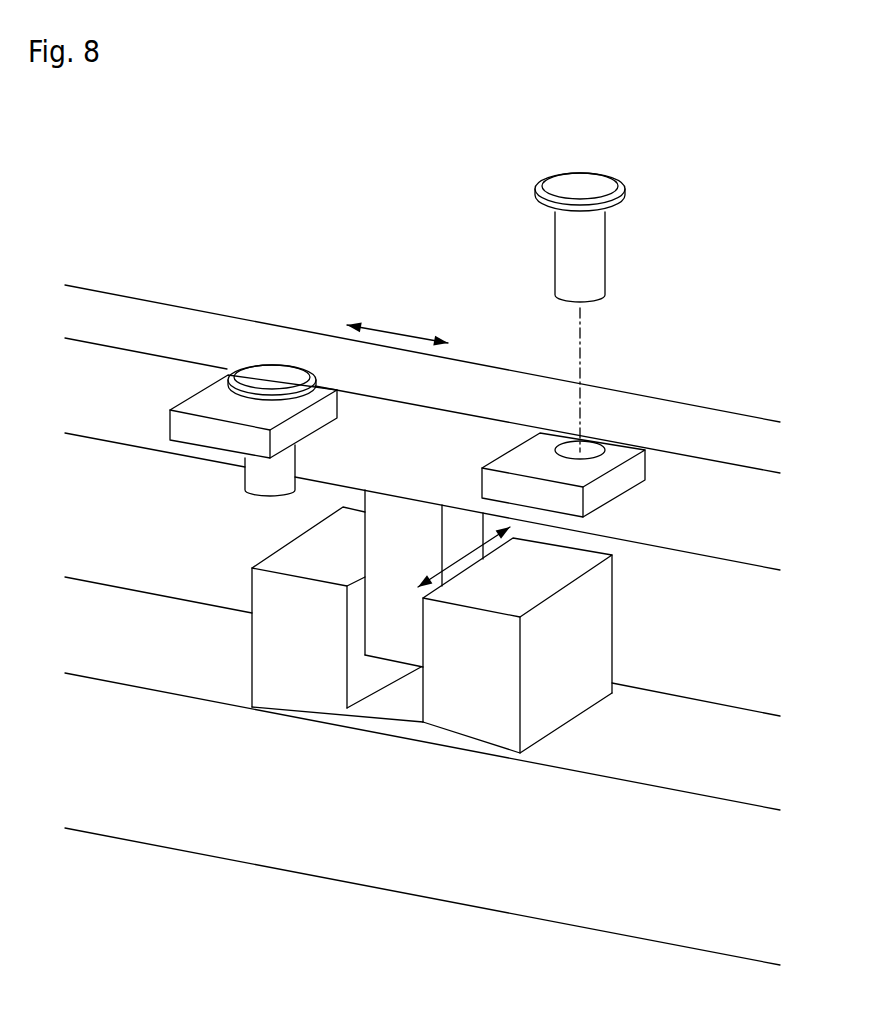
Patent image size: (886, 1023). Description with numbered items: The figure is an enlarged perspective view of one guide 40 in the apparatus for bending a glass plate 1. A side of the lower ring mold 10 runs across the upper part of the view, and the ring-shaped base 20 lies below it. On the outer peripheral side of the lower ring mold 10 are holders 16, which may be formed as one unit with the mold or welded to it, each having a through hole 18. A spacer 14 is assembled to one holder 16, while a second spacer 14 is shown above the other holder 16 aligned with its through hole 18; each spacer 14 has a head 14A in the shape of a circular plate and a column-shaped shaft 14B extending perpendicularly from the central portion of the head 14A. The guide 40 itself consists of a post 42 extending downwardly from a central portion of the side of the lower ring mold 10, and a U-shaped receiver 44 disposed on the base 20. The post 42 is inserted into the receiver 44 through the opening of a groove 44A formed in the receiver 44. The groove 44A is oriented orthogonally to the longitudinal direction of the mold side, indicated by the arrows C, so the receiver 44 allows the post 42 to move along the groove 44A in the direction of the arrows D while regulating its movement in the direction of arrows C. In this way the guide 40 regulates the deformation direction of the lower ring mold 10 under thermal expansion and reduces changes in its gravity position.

The apparatus for bending a glass plate 1 is at (302, 139).
The lower ring mold 10 is at (482, 381).
The spacer 14 is at (441, 326).
The head 14A is at (273, 372).
The shaft 14B is at (263, 480).
The holder 16 is at (403, 439).
The through hole 18 is at (600, 447).
The base 20 is at (695, 722).
The guide 40 is at (391, 690).
The post 42 is at (391, 652).
The U-shaped receiver 44 is at (296, 713).
The groove 44A is at (383, 698).